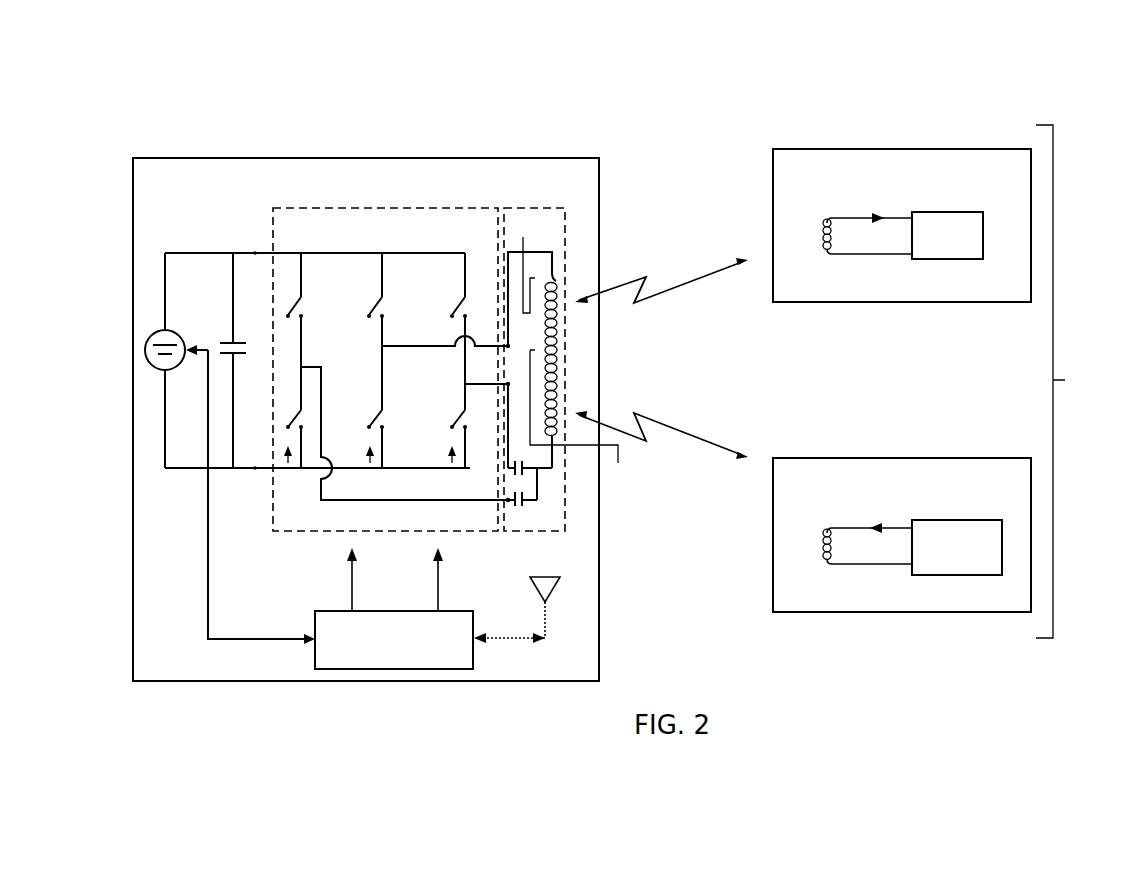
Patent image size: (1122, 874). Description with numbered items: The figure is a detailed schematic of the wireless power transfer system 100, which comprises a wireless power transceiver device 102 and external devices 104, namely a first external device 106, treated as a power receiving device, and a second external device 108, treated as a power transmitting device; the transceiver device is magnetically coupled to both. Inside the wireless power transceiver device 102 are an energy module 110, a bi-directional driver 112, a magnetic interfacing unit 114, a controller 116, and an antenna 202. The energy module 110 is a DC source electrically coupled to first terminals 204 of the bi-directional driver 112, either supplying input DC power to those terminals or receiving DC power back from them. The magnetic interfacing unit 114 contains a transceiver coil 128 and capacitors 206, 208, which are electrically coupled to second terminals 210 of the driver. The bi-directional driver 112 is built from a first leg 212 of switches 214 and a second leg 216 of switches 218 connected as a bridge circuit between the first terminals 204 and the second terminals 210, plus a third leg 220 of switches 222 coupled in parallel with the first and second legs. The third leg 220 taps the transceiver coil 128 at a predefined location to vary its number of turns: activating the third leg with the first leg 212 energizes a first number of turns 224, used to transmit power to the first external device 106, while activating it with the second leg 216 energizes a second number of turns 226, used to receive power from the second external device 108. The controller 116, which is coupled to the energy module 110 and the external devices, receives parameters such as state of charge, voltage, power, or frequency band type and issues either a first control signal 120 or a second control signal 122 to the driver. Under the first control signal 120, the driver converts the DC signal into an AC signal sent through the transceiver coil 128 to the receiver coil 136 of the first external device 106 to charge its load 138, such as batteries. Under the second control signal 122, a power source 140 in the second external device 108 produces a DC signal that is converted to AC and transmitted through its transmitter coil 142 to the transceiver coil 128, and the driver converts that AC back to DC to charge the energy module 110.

The wireless power transfer system 100 is at (203, 68).
The wireless power transceiver device 102 is at (483, 157).
The external devices 104 is at (938, 376).
The first external device 106 is at (900, 148).
The second external device 108 is at (900, 457).
The energy module 110 is at (146, 361).
The bi-directional driver 112 is at (481, 207).
The magnetic interfacing unit 114 is at (535, 207).
The controller 116 is at (314, 622).
The first control signal 120 is at (350, 585).
The second control signal 122 is at (436, 585).
The transceiver coil 128 is at (570, 268).
The receiver coil 136 is at (820, 240).
The load 138 is at (947, 260).
The power source 140 is at (948, 576).
The transmitter coil 142 is at (820, 552).
The antenna 202 is at (560, 590).
The first terminals 204 is at (255, 252).
The capacitor 206 is at (524, 470).
The capacitor 208 is at (524, 508).
The second terminals 210 is at (506, 345).
The first leg 212 is at (370, 464).
The switches 214 is at (373, 304).
The second leg 216 is at (452, 464).
The switches 218 is at (456, 304).
The third leg 220 is at (290, 464).
The switches 222 is at (293, 304).
The first number of turns 224 is at (530, 265).
The second number of turns 226 is at (583, 419).